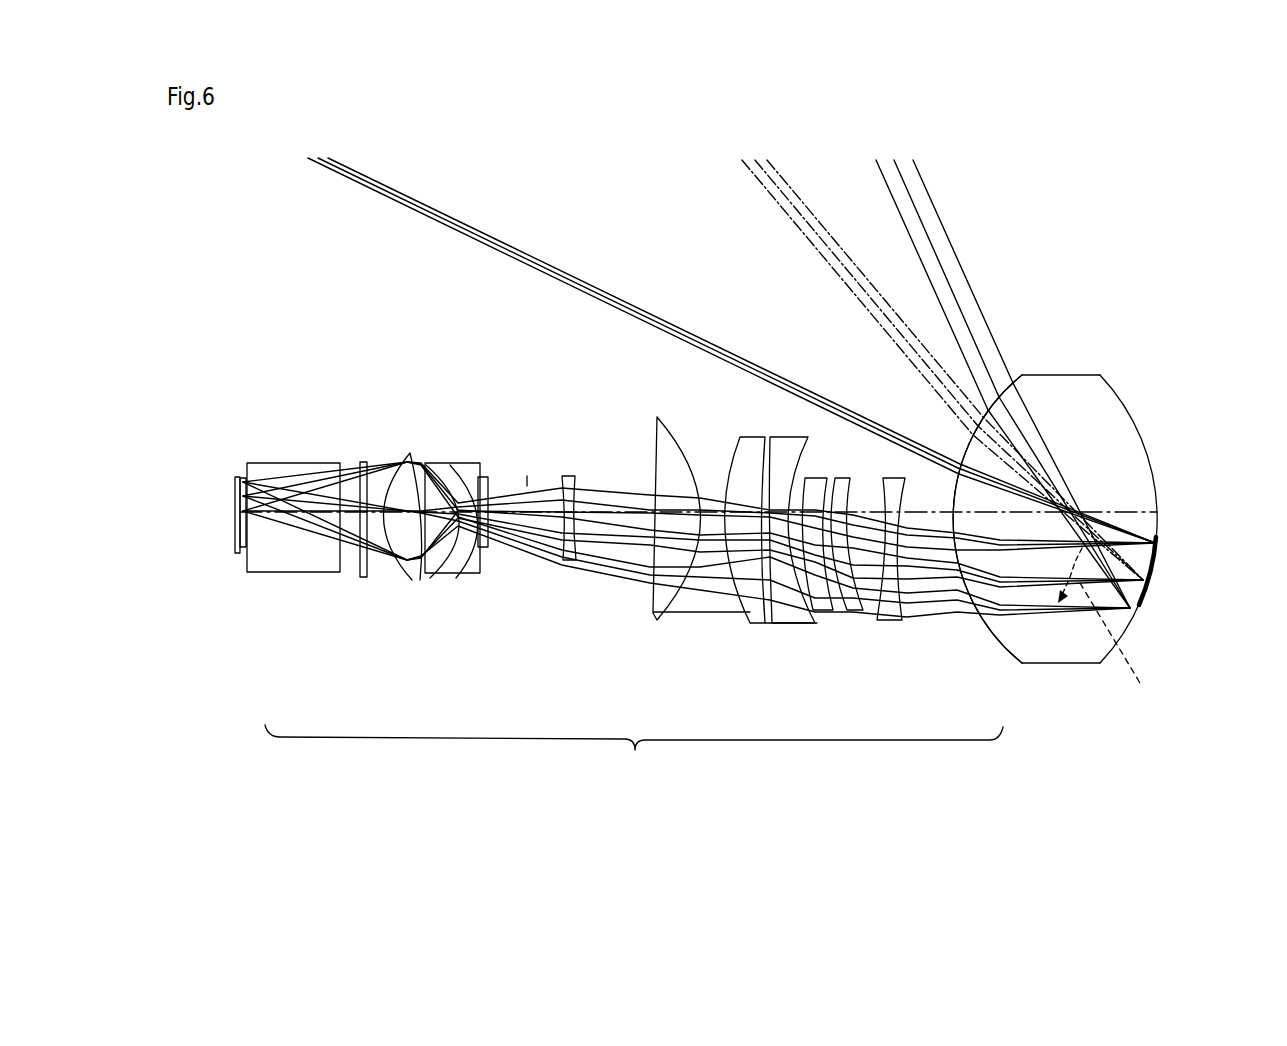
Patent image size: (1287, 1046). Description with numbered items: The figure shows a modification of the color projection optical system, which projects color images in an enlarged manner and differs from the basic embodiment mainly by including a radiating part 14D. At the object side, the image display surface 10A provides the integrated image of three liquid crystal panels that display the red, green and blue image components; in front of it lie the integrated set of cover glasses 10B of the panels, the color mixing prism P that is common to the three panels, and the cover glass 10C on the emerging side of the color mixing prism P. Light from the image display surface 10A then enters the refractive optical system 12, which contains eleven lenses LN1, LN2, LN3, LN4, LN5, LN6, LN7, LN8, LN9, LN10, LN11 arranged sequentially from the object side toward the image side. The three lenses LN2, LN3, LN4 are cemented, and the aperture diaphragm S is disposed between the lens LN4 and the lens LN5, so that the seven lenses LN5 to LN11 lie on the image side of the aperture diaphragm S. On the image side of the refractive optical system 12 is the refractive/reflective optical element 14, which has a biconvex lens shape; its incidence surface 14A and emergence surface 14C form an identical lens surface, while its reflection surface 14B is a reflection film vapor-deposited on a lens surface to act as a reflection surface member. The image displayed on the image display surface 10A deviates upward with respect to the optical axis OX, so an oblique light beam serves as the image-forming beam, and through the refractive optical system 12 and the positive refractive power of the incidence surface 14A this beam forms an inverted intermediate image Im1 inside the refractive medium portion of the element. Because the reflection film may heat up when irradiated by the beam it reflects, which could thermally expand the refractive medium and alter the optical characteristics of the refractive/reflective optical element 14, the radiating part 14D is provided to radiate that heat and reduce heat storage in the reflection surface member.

The image display surface 10A is at (200, 449).
The cover glasses 10B is at (251, 446).
The cover glass of the color mixing prism 10C is at (334, 461).
The color mixing prism P is at (293, 497).
The aperture diaphragm S is at (526, 462).
The lens LN1 is at (358, 582).
The lens LN2 is at (419, 587).
The lens LN3 is at (451, 588).
The lens LN4 is at (511, 594).
The lens LN5 is at (617, 594).
The lens LN6 is at (701, 564).
The lens LN7 is at (771, 574).
The lens LN8 is at (819, 574).
The lens LN9 is at (869, 595).
The lens LN10 is at (926, 595).
The lens LN11 is at (990, 595).
The refractive optical system 12 is at (634, 772).
The refractive/reflective optical element 14 is at (1061, 496).
The incidence surface 14A is at (968, 453).
The reflection surface 14B is at (1137, 448).
The emergence surface 14C is at (987, 519).
The radiating part 14D is at (1189, 578).
The optical axis OX is at (729, 476).
The intermediate image Im1 is at (1130, 627).